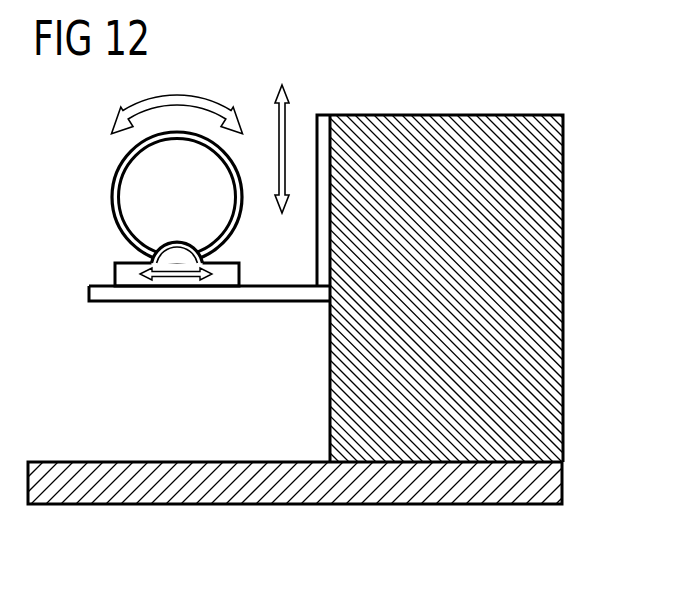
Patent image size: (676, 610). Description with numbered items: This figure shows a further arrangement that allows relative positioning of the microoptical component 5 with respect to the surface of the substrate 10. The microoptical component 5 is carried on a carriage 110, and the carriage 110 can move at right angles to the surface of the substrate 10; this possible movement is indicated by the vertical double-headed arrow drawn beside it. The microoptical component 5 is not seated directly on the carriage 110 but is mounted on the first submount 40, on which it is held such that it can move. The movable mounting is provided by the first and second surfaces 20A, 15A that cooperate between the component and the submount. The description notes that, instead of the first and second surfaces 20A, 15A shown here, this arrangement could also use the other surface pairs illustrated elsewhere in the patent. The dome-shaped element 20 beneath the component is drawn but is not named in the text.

The microoptical component 5 is at (135, 181).
The second surface 15A is at (191, 240).
The dome-shaped bearing 20 is at (172, 250).
The first surface 20A is at (142, 251).
The first submount 40 is at (127, 274).
The carriage 110 is at (323, 122).
The substrate 10 is at (273, 490).